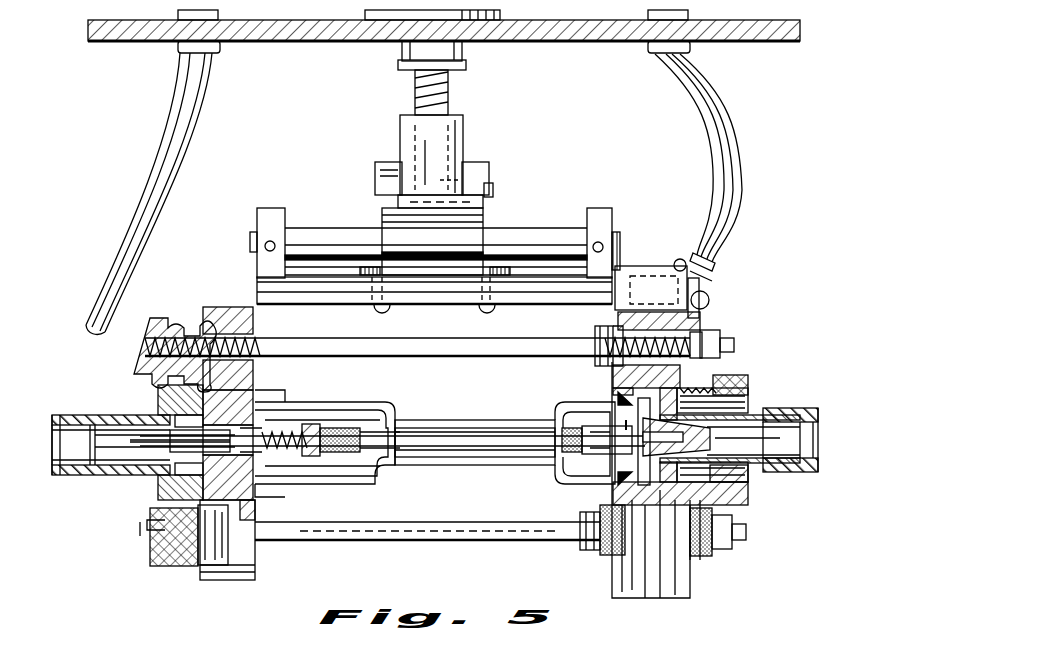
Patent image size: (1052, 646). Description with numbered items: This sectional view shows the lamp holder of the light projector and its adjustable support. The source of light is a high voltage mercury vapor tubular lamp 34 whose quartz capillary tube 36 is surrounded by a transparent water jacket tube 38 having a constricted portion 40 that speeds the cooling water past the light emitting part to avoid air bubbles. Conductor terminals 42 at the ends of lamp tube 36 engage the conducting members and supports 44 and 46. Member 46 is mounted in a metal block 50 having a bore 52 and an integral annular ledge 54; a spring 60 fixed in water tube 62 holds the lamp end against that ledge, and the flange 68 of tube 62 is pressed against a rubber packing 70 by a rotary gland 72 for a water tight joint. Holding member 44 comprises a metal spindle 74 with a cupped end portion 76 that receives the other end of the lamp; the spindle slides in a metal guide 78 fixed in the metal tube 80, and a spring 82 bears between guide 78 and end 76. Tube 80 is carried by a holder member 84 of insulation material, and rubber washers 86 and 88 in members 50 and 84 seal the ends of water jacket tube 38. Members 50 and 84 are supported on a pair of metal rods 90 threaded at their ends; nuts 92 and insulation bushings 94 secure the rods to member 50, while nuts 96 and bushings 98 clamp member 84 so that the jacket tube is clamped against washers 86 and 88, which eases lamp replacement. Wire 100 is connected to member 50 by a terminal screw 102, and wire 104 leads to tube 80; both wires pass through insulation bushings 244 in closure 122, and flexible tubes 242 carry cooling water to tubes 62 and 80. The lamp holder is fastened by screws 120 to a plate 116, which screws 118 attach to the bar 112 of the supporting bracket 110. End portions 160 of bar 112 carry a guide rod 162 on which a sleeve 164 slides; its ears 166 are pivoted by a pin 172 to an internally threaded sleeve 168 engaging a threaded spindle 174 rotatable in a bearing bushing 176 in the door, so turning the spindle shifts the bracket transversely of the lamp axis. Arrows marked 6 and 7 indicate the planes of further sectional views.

The section line 6-6 / housing body 6 is at (160, 382).
The section line 7- 7 is at (604, 386).
The high voltage mercury vapor tubular lamp 34 is at (450, 432).
The quartz capillary tube 36 is at (432, 445).
The water jacket tube 38 is at (376, 484).
The constricted portion 40 is at (480, 466).
The conductor terminals 42 is at (335, 428).
The lamp holding member 44 is at (312, 424).
The terminal member 46 is at (598, 458).
The metal block 50 is at (625, 600).
The bore 52 is at (705, 530).
The annular ledge 54 is at (572, 410).
The spring 60 is at (752, 398).
The water tube 62 is at (755, 505).
The flange 68 is at (735, 505).
The rubber washer or packing 70 is at (680, 555).
The rotary sleeve or gland 72 is at (748, 382).
The metal spindle 74 is at (250, 470).
The cupped end portion 76 is at (300, 450).
The metal guide 78 is at (168, 460).
The metal tube 80 is at (138, 415).
The spring 82 is at (272, 430).
The holder member 84 is at (255, 575).
The rubber washer or packing 86 is at (655, 598).
The rubber washer or packing 88 is at (252, 540).
The metal rods 90 is at (398, 357).
The nuts 92 is at (596, 336).
The insulation sleeves or bushings 94 is at (700, 355).
The nuts 96 is at (162, 320).
The insulation sleeves or bushings 98 is at (238, 308).
The electric wire 100 is at (722, 128).
The terminal screw 102 is at (706, 294).
The wire 104 is at (162, 160).
The adjustable supporting member or bracket 110 is at (640, 204).
The bar 112 is at (332, 298).
The plate 116 is at (545, 235).
The screws 118 is at (483, 310).
The screws 120 is at (658, 262).
The front pivoted closure or door 122 is at (264, 40).
The forwardly extending end portions 160 is at (260, 212).
The guide member 162 is at (330, 232).
The sleeve 164 is at (470, 228).
The ears 166 is at (384, 174).
The internally threaded sleeve 168 is at (466, 128).
The pivot pin 172 is at (490, 188).
The spindle 174 is at (458, 92).
The bearing bushing 176 is at (404, 58).
The flexible tubes 242 is at (72, 478).
The insulation bushings 244 is at (190, 52).